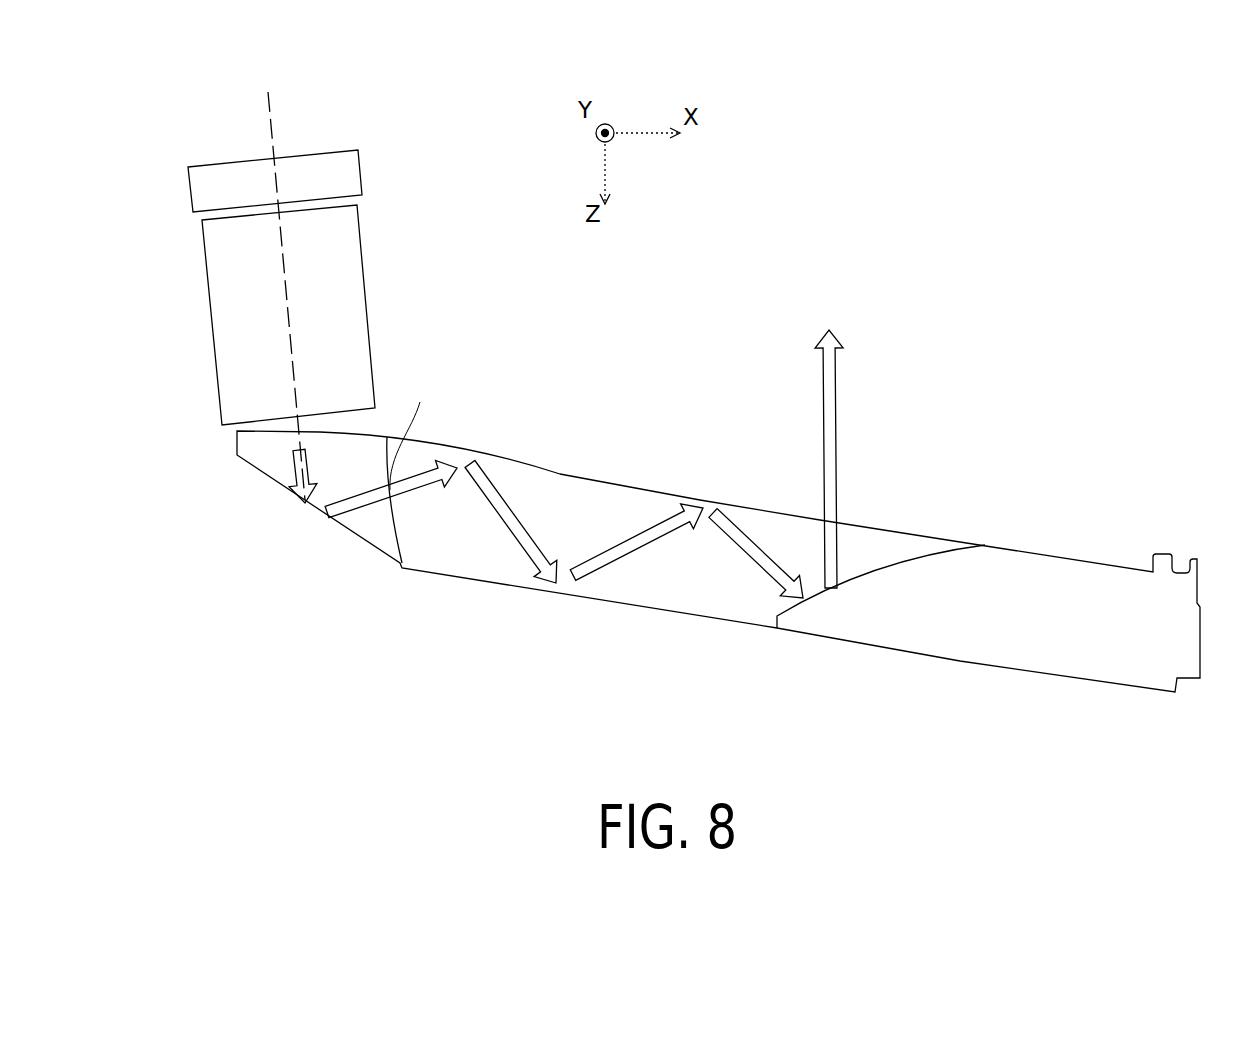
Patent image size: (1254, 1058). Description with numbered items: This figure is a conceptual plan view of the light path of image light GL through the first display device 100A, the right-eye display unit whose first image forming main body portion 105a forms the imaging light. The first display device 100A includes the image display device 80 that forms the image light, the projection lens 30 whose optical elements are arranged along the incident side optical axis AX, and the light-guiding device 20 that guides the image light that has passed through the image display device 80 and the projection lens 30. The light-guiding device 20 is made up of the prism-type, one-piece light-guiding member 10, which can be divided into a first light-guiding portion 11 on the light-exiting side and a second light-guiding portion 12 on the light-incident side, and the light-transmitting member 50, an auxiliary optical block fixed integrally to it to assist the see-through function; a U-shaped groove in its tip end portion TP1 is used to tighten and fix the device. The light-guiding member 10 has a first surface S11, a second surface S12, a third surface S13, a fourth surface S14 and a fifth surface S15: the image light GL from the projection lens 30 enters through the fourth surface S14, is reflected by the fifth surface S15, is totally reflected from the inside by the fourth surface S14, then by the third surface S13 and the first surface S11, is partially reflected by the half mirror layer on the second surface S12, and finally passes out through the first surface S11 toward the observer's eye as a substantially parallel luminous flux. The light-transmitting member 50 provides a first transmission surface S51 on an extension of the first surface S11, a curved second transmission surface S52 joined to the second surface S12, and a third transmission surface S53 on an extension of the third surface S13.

The first display device 100A is at (806, 103).
The first image forming main body portion 105a is at (747, 278).
The incident side optical axis AX is at (265, 116).
The image display device 80 is at (313, 167).
The projection lens 30 is at (200, 323).
The light-guiding device 20 is at (590, 665).
The light-guiding member 10 is at (680, 425).
The first light-guiding portion 11 is at (740, 613).
The second light-guiding portion 12 is at (468, 582).
The light-transmitting member 50 is at (1082, 655).
The image light GL is at (310, 467).
The first surface S11 is at (863, 523).
The second surface S12 is at (862, 590).
The third surface S13 is at (662, 613).
The fourth surface S14 is at (505, 452).
The fifth surface S15 is at (328, 515).
The first transmission surface S51 is at (1067, 560).
The second transmission surface S52 is at (918, 562).
The third transmission surface S53 is at (1002, 670).
The tip end portion TP1 is at (1180, 657).